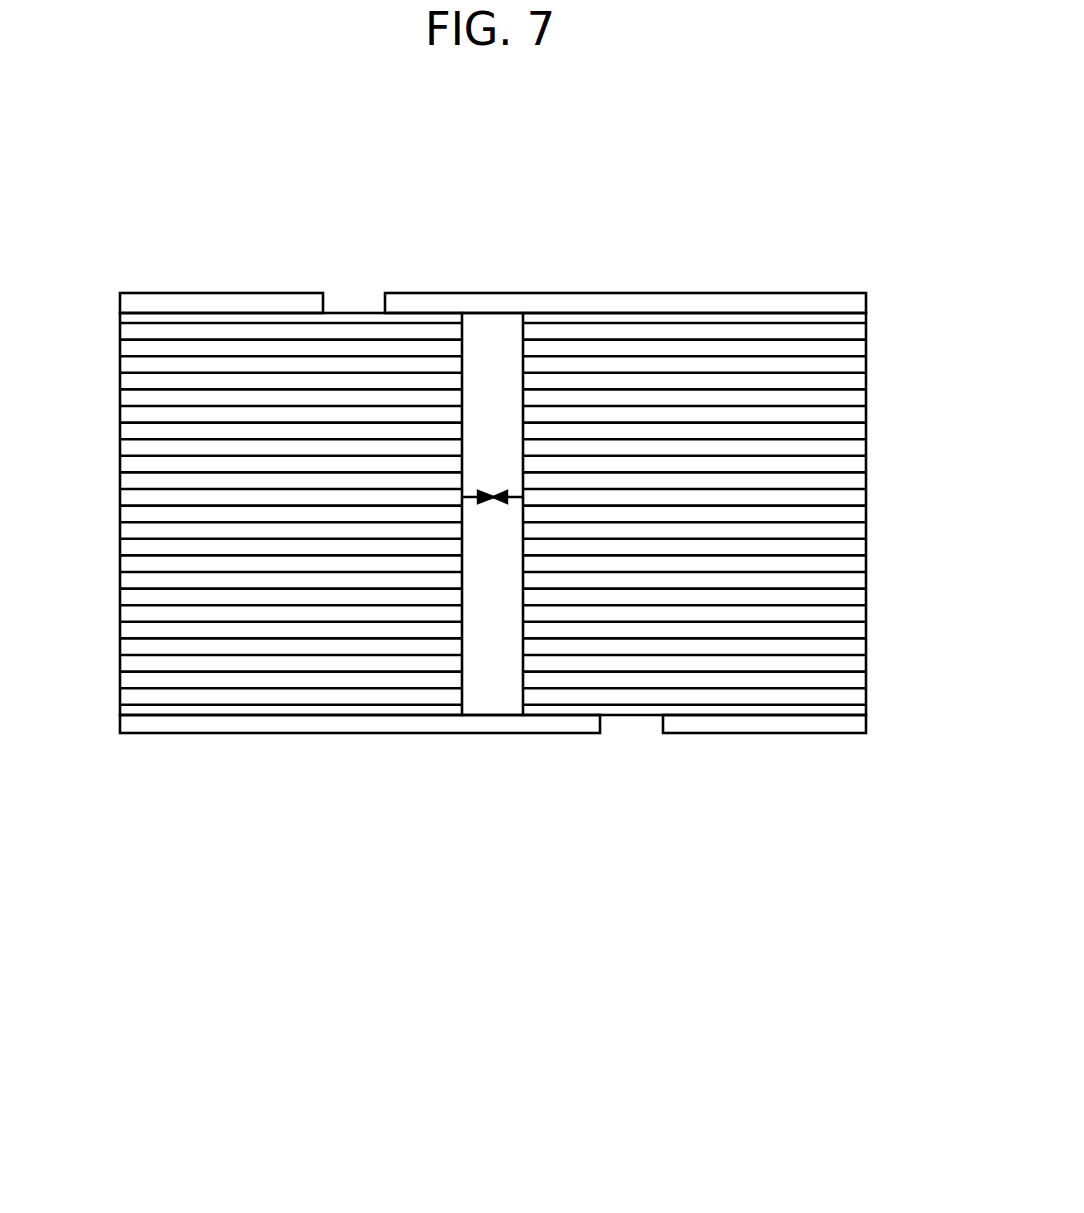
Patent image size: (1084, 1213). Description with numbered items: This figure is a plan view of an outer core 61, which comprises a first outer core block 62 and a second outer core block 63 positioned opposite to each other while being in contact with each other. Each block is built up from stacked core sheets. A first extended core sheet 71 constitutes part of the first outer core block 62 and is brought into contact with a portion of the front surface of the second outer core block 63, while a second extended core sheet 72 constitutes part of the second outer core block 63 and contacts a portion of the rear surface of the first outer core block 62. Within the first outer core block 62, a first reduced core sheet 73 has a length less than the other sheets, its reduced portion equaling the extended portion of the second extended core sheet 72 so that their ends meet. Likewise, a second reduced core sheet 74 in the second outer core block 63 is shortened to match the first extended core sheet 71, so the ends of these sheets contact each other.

The outer core 61 is at (493, 694).
The first outer core block 62 is at (300, 758).
The second outer core block 63 is at (694, 656).
The first extended core sheet 71 is at (155, 727).
The second extended core sheet 72 is at (767, 300).
The first reduced core sheet 73 is at (245, 302).
The second reduced core sheet 74 is at (805, 722).